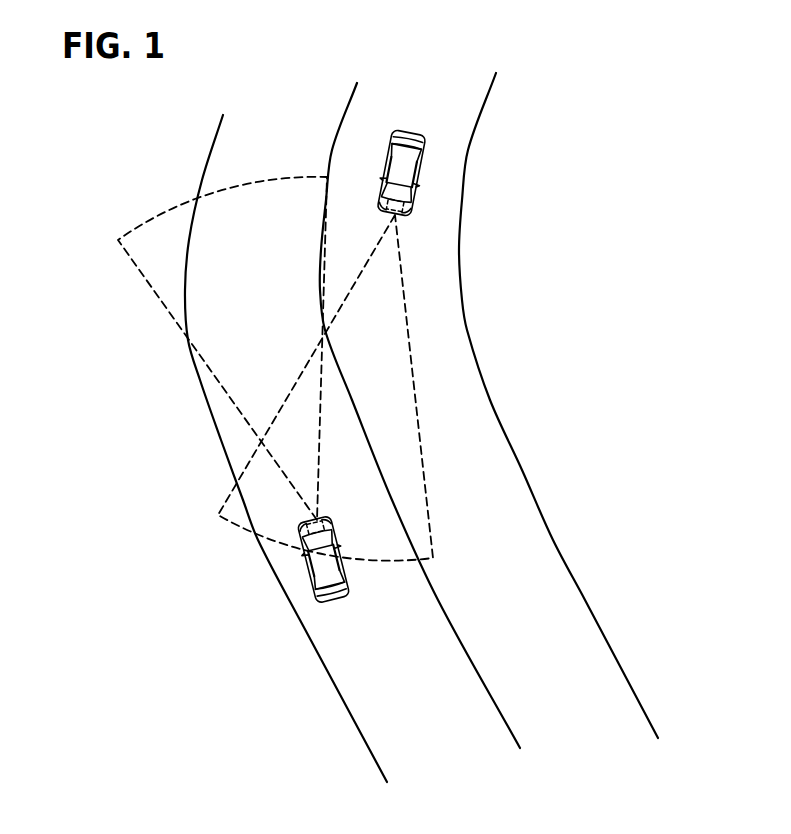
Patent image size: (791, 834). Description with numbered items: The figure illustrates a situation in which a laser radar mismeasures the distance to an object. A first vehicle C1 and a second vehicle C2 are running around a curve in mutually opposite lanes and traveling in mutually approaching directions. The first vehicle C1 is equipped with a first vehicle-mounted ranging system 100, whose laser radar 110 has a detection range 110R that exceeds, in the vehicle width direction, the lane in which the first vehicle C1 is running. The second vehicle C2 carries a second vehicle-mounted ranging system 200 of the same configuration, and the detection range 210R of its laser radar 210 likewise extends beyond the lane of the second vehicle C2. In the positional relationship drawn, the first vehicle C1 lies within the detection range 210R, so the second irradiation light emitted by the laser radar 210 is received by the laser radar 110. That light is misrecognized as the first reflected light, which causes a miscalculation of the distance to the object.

The first vehicle-mounted ranging system 100 is at (281, 570).
The laser radar 110 is at (273, 562).
The detection range 110R is at (152, 311).
The second vehicle-mounted ranging system 200 is at (448, 182).
The laser radar 210 is at (450, 201).
The detection range 210R is at (432, 493).
The first vehicle C1 is at (301, 571).
The second vehicle C2 is at (448, 162).